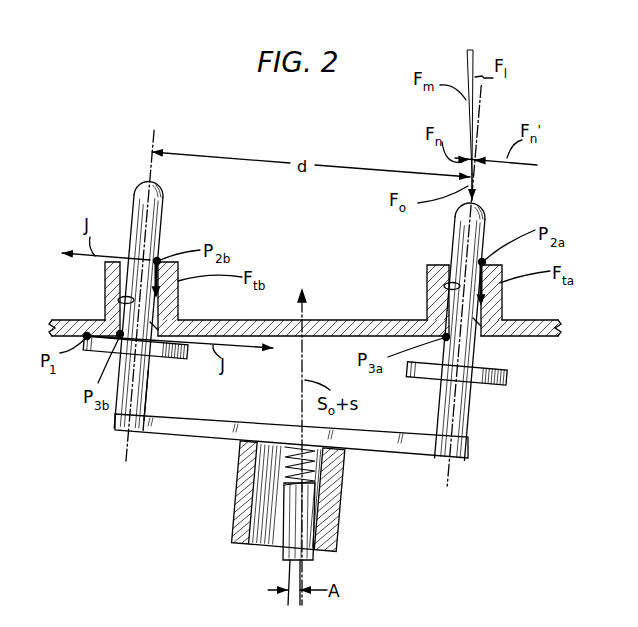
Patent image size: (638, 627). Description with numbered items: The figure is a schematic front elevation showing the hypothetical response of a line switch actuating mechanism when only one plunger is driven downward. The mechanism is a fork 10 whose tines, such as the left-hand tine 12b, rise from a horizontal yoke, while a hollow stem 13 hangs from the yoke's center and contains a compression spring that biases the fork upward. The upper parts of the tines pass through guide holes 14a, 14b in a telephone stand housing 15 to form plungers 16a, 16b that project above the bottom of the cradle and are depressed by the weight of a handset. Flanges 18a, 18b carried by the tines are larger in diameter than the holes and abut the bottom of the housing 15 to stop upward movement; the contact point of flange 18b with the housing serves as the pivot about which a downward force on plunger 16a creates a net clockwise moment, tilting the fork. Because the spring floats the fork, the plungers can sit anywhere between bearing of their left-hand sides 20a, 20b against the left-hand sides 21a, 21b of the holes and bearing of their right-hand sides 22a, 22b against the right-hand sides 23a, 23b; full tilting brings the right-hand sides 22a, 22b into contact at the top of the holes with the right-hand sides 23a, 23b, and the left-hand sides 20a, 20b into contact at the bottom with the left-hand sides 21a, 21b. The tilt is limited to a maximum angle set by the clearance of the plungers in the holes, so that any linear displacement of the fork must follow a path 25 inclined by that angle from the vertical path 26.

The fork 10 is at (410, 471).
The tine 12b is at (150, 388).
The hollow stem 13 is at (343, 525).
The guide hole 14a is at (452, 264).
The guide hole 14b is at (127, 259).
The telephone stand housing 15 is at (283, 345).
The plunger 16a is at (477, 350).
The plunger 16b is at (158, 230).
The flange 18a is at (504, 388).
The flange 18b is at (95, 353).
The left-hand side of plunger 20a is at (455, 226).
The left-hand side of plunger 20b is at (106, 280).
The left-hand side of hole 21a is at (444, 285).
The left-hand side of hole 21b is at (118, 300).
The right-hand side of plunger 22a is at (483, 220).
The right-hand side of plunger 22b is at (160, 196).
The right-hand side of hole 23a is at (473, 317).
The right-hand side of hole 23b is at (150, 320).
The path 25 is at (290, 572).
The vertical path 26 is at (302, 574).